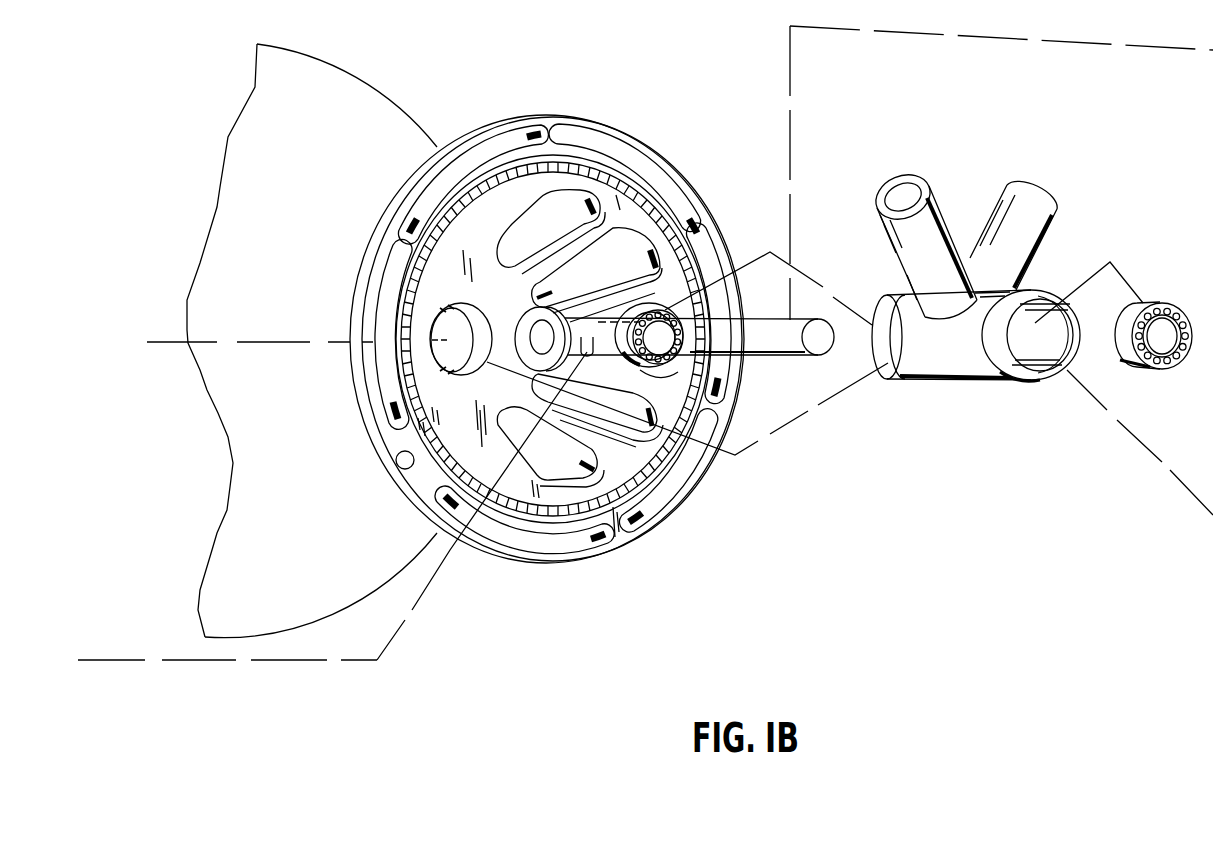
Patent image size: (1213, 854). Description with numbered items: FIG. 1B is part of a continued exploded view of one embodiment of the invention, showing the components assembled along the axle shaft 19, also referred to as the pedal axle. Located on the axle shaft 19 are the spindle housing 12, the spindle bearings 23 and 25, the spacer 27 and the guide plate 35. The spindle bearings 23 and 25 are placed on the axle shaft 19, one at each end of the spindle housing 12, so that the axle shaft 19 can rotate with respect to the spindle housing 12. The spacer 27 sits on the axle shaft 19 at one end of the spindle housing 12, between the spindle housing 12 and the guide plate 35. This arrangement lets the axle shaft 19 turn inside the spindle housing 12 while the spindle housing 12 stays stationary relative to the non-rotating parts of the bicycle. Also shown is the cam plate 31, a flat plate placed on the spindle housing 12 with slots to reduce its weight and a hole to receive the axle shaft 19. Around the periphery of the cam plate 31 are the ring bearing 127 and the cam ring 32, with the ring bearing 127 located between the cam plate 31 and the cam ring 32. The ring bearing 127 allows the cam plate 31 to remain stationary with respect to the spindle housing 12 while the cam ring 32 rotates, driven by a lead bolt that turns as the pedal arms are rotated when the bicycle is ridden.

The spindle housing 12 is at (957, 382).
The axle shaft 19 is at (807, 355).
The spindle bearing 23 is at (645, 303).
The spindle bearing 25 is at (1152, 307).
The spacer 27 is at (552, 307).
The cam plate 31 is at (483, 220).
The cam ring 32 is at (540, 123).
The guide plate 35 is at (247, 227).
The ring bearing 127 is at (640, 490).